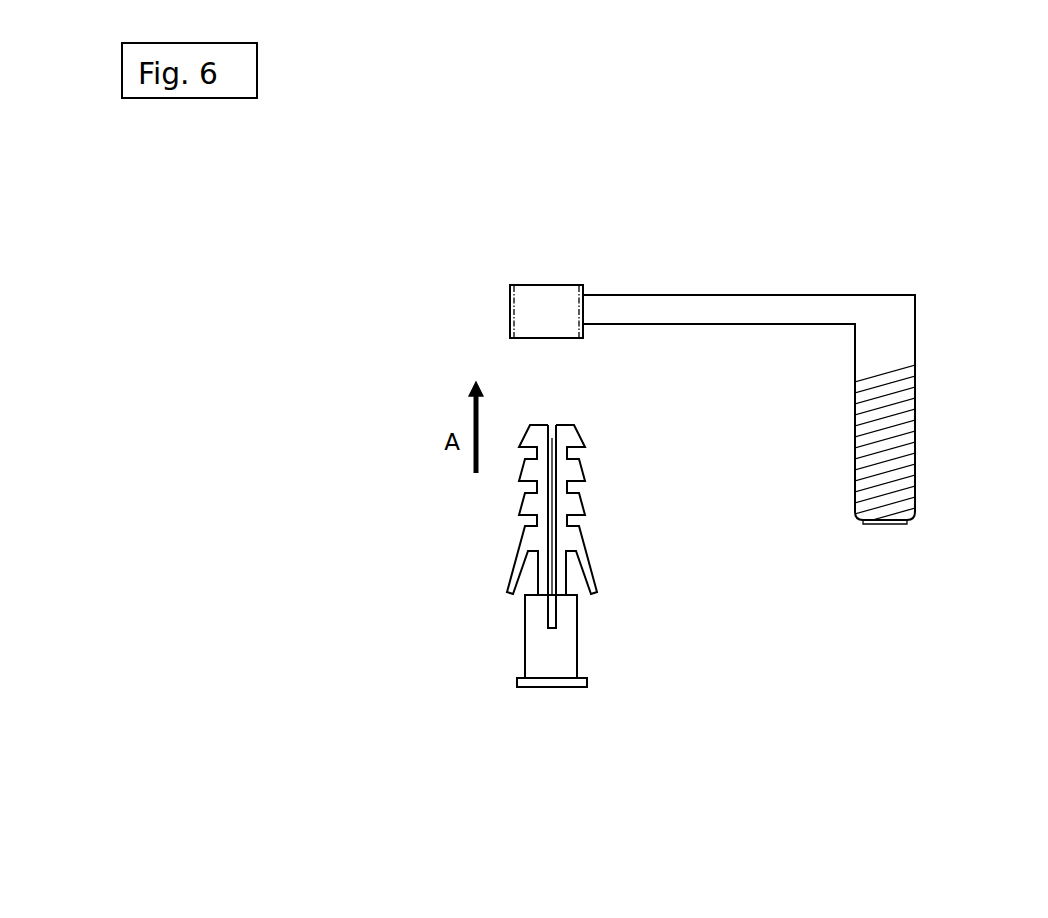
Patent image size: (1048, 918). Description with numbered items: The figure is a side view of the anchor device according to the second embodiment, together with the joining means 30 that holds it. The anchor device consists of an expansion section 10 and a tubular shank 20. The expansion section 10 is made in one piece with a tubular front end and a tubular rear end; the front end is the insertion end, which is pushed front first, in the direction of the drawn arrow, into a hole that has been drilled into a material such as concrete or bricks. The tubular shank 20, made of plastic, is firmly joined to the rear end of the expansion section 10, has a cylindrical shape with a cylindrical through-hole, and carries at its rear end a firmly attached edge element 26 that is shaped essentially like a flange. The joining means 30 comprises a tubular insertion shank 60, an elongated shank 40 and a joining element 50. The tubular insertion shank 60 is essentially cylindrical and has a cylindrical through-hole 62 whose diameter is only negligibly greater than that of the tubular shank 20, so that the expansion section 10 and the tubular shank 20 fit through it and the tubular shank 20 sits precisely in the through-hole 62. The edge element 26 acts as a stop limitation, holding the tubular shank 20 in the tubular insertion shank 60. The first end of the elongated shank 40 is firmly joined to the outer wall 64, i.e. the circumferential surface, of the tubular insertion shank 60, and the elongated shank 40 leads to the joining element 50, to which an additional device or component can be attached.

The expansion section 10 is at (540, 568).
The tubular shank 20 is at (540, 651).
The edge element 26 is at (555, 683).
The joining means 30 is at (720, 389).
The elongated shank 40 is at (771, 315).
The joining element 50 is at (907, 508).
The tubular insertion shank 60 is at (508, 279).
The through-hole 62 is at (552, 302).
The outer wall 64 is at (510, 322).